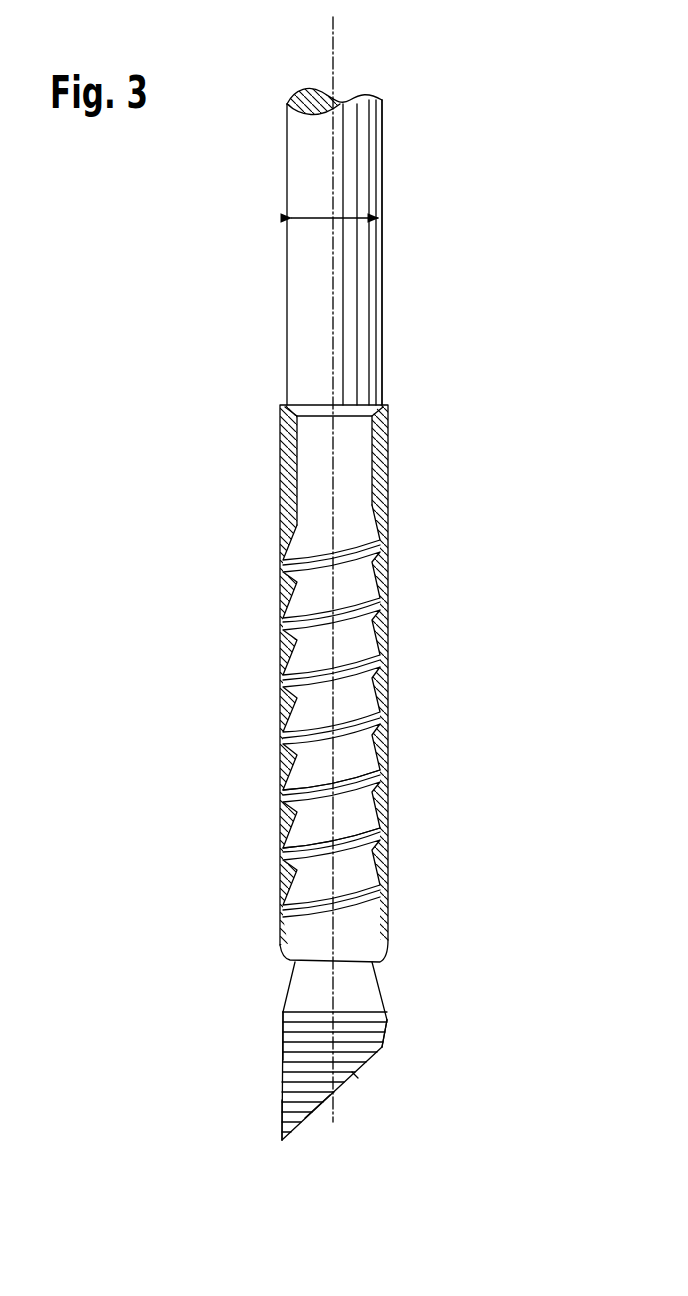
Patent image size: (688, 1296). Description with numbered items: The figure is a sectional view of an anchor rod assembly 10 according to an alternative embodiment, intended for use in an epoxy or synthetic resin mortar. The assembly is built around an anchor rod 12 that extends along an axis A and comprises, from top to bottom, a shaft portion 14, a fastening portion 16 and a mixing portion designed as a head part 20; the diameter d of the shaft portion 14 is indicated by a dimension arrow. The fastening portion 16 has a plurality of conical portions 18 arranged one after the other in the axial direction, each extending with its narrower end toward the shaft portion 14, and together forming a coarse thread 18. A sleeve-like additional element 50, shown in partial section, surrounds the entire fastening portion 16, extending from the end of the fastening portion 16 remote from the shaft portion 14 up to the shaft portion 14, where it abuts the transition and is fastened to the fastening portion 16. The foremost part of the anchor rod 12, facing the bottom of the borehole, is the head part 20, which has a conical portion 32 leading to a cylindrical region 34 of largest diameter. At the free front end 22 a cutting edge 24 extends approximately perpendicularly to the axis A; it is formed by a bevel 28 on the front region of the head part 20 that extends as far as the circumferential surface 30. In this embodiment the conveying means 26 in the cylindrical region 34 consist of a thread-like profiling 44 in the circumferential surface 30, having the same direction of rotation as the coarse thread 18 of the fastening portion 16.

The axis A is at (340, 47).
The anchor rod assembly 10 is at (343, 647).
The anchor rod 12 is at (350, 352).
The shaft portion 14 is at (385, 257).
The shaft diameter d is at (290, 216).
The fastening portion 16 is at (388, 740).
The conical portions 18 is at (378, 812).
The additional element 50 is at (393, 907).
The conical portion of the head part 32 is at (360, 968).
The head part 20 is at (288, 976).
The free front end 22 is at (285, 1140).
The thread-like profiling 44 is at (283, 1053).
The conveying means 26 is at (298, 1048).
The circumferential surface 30 is at (281, 1116).
The cylindrical region 34 is at (394, 1040).
The bevel 28 is at (305, 1120).
The cutting edge 24 is at (354, 1076).